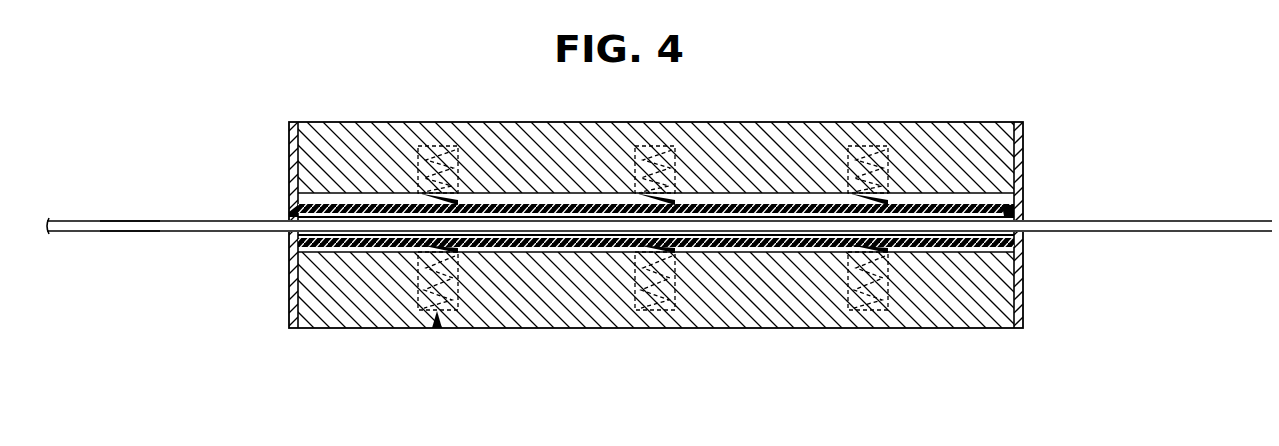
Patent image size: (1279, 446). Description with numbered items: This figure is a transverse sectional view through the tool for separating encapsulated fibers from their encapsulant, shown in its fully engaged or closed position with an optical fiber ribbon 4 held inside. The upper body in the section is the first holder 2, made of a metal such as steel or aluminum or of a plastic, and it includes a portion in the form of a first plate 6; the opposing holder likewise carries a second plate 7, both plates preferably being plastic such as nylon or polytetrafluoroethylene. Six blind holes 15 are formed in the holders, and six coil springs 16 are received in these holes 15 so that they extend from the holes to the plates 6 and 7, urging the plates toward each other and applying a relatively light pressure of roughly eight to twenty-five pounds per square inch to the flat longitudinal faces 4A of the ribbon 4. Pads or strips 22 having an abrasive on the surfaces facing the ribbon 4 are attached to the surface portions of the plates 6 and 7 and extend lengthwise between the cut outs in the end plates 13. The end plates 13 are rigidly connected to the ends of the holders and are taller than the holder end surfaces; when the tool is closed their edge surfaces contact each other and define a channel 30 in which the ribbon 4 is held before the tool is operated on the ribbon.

The first holder 2 is at (324, 122).
The optical fiber ribbon 4 is at (77, 220).
The flat longitudinal faces 4A is at (125, 220).
The first plate 6 is at (292, 214).
The second plate 7 is at (292, 244).
The end plates 13 is at (292, 300).
The blind holes 15 is at (438, 329).
The coil springs 16 is at (437, 146).
The abrasive strips 22 is at (1020, 212).
The channel 30 is at (292, 217).